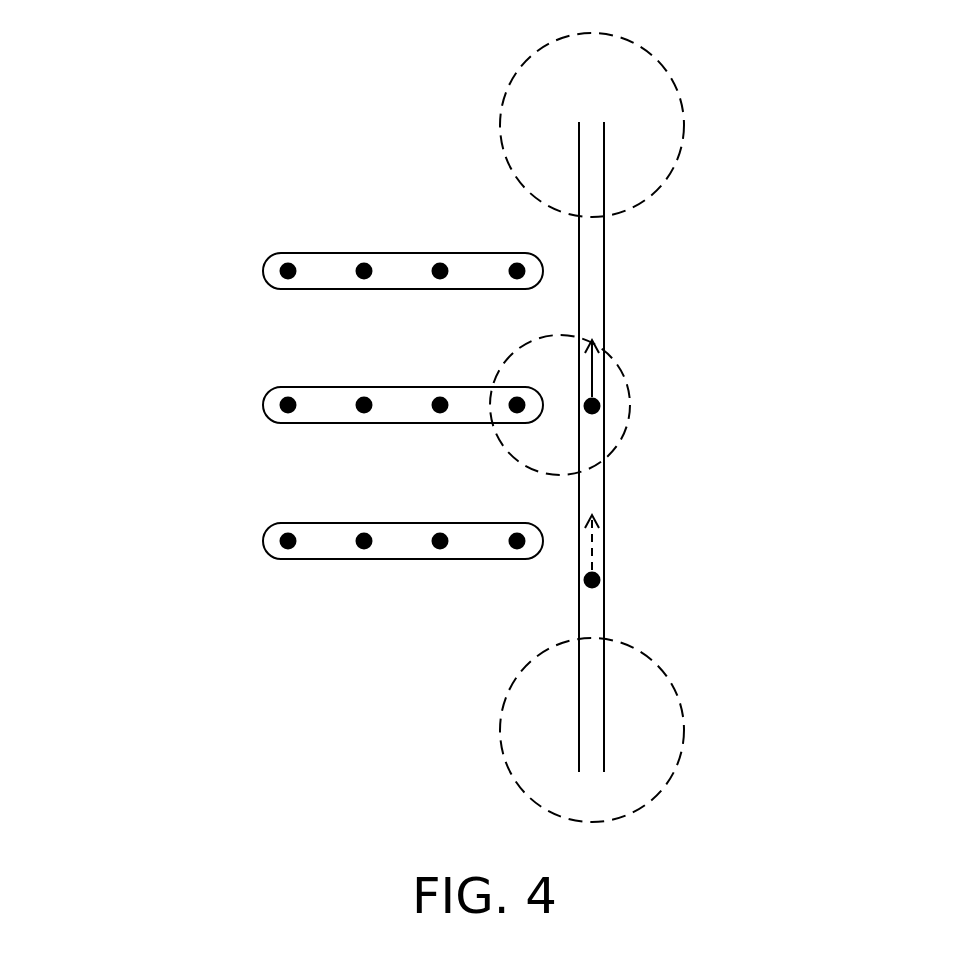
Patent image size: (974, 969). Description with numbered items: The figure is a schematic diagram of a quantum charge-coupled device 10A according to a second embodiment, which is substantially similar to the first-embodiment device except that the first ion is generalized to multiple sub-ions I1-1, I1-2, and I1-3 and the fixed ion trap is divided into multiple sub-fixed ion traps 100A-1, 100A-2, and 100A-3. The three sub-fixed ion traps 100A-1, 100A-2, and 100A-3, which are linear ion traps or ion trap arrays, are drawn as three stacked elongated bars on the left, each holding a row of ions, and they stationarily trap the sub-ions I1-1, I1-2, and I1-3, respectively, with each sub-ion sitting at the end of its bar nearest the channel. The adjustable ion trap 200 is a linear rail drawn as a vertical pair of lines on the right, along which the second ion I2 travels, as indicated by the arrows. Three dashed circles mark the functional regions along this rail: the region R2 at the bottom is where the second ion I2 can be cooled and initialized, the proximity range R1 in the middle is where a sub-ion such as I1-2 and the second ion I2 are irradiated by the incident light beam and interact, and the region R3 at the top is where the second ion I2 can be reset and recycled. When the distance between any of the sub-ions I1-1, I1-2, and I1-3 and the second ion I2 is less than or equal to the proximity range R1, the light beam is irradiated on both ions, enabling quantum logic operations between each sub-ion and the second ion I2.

The quantum charge-coupled device 10A is at (928, 847).
The sub-fixed ion trap 100A-1 is at (294, 254).
The sub-fixed ion trap 100A-2 is at (294, 387).
The sub-fixed ion trap 100A-3 is at (294, 522).
The sub-ion I1-1 is at (452, 241).
The sub-ion I1-2 is at (452, 374).
The sub-ion I1-3 is at (452, 509).
The second ion I2 is at (600, 408).
The adjustable ion trap 200 is at (604, 268).
The proximity range R1 is at (578, 405).
The region R2 is at (611, 730).
The region R3 is at (611, 125).